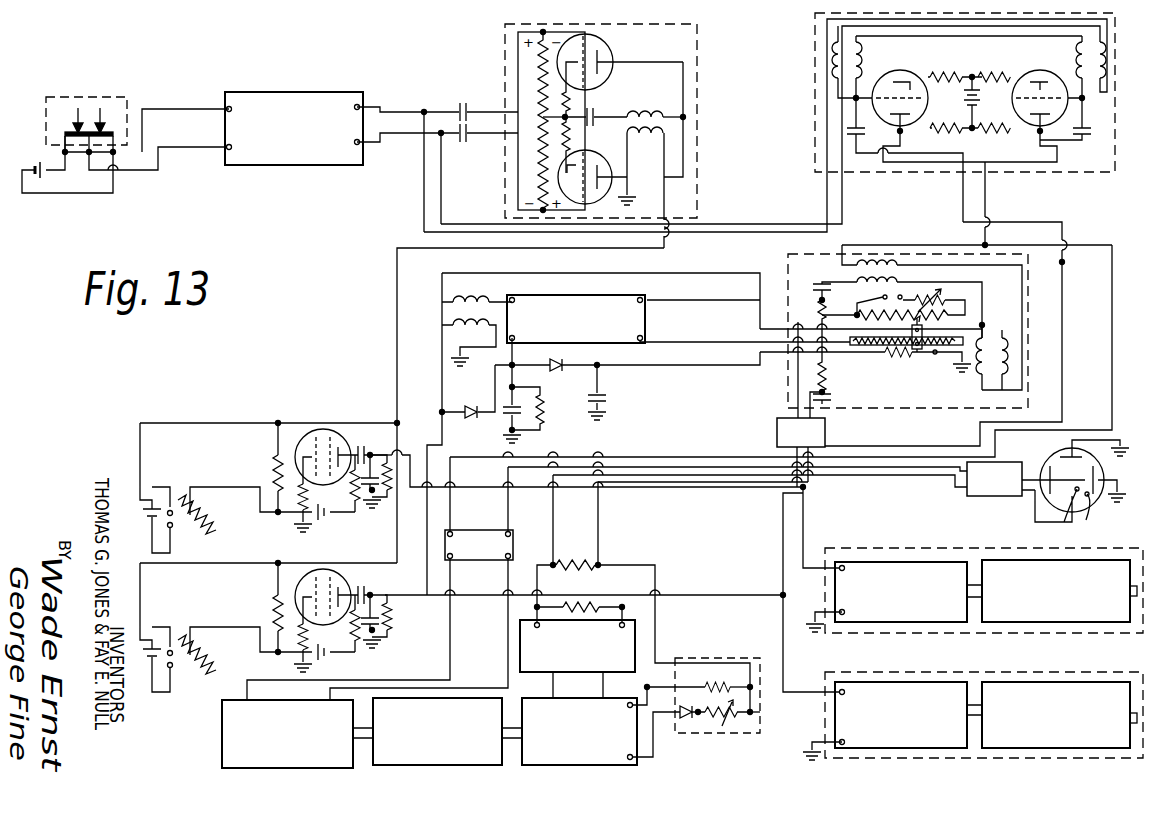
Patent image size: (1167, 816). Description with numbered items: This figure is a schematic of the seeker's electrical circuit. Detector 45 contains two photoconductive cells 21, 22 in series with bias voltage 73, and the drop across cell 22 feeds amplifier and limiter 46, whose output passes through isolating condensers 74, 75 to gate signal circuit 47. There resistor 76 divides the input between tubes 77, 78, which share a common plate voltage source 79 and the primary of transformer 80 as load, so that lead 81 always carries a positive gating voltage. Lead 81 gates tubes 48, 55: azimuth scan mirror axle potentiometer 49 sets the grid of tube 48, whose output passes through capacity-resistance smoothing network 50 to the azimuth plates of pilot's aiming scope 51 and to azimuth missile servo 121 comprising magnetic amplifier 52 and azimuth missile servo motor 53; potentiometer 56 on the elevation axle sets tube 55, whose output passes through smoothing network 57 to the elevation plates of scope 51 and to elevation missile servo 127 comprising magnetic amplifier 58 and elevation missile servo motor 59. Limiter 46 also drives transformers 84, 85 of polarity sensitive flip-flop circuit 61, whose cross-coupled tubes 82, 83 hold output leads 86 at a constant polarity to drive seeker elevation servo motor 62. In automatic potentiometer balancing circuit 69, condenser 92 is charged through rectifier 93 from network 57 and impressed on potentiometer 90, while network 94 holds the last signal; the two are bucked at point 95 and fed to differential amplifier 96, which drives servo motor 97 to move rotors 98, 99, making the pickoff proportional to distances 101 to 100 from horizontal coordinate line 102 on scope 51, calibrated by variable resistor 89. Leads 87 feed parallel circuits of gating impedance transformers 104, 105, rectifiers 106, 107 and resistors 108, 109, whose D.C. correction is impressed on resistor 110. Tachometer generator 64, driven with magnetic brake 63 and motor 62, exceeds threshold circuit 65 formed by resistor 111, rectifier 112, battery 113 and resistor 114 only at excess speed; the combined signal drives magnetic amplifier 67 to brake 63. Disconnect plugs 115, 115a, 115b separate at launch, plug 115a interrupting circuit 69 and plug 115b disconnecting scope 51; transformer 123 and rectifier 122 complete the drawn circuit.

The photoconductive cell 21 is at (65, 133).
The photoconductive cell 22 is at (112, 130).
The detector 45 is at (68, 97).
The amplifier and limiter 46 is at (268, 166).
The gate signal circuit 47 is at (697, 62).
The tube 48 is at (318, 430).
The azimuth scan mirror axle potentiometer 49 is at (205, 530).
The capacity-resistance smoothing network 50 is at (378, 504).
The pilot's aiming scope 51 is at (1058, 440).
The magnetic amplifier 52 is at (890, 562).
The azimuth missile servo motor 53 is at (990, 560).
The tube 55 is at (324, 572).
The potentiometer 56 is at (202, 680).
The capacity-resistance smoothing network 57 is at (380, 625).
The magnetic amplifier 58 is at (855, 682).
The elevation missile servo motor 59 is at (1010, 682).
The polarity sensitive flip-flop circuit 61 is at (1075, 173).
The seeker elevation servo motor 62 is at (272, 770).
The magnetic brake 63 is at (440, 770).
The tachometer type D.C. generator 64 is at (625, 766).
The threshold circuit 65 is at (732, 658).
The magnetic amplifier 67 is at (638, 628).
The automatic potentiometer balancing circuit 69 is at (1030, 310).
The bias voltage 73 is at (38, 170).
The isolating condenser 74 is at (457, 106).
The isolating condenser 75 is at (470, 140).
The resistor 76 is at (541, 110).
The tube 77 is at (612, 42).
The tube 78 is at (622, 166).
The common plate voltage source 79 is at (597, 115).
The transformer 80 is at (645, 112).
The lead 81 is at (668, 194).
The tube 82 is at (912, 78).
The tube 83 is at (1034, 74).
The transformer 84 is at (862, 63).
The transformer 85 is at (1097, 88).
The output leads 86 is at (965, 207).
The leads 87 is at (893, 294).
The variable resistor 89 is at (920, 300).
The potentiometer 90 is at (925, 362).
The condenser 92 is at (604, 398).
The rectifier 93 is at (558, 370).
The capacity-resistance network 94 is at (508, 412).
The point 95 is at (514, 388).
The differential amplifier 96 is at (645, 298).
The servo motor 97 is at (915, 352).
The rotor 98 is at (935, 354).
The rotor 99 is at (936, 314).
The distance 100 is at (1082, 512).
The distance 101 is at (1064, 520).
The horizontal coordinate line 102 is at (1044, 470).
The gating impedance transformer 104 is at (855, 270).
The gating impedance transformer 105 is at (983, 378).
The rectifier 106 is at (797, 282).
The rectifier 107 is at (823, 394).
The resistor 108 is at (823, 368).
The resistor 109 is at (826, 290).
The resistor 110 is at (585, 544).
The resistor 111 is at (708, 683).
The rectifier 112 is at (684, 720).
The battery 113 is at (735, 724).
The resistor 114 is at (752, 714).
The disconnect plug 115 is at (492, 530).
The disconnect plug 115a is at (826, 440).
The disconnect plug 115b is at (967, 474).
The azimuth missile servo 121 is at (950, 548).
The rectifier 122 is at (478, 411).
The transformer 123 is at (452, 318).
The elevation missile servo 127 is at (945, 660).